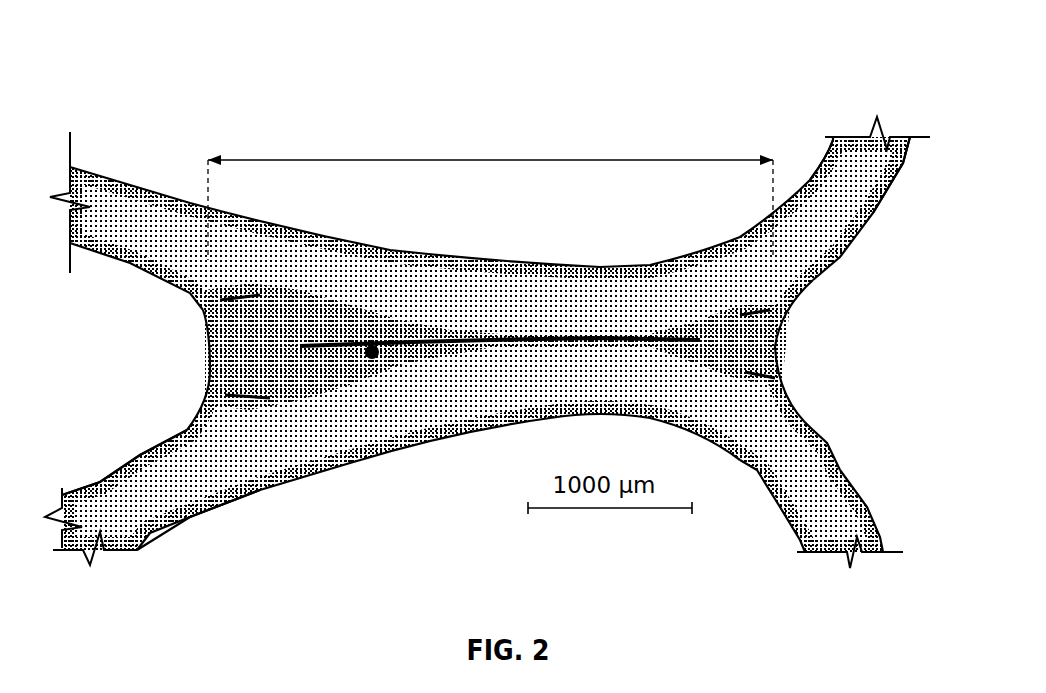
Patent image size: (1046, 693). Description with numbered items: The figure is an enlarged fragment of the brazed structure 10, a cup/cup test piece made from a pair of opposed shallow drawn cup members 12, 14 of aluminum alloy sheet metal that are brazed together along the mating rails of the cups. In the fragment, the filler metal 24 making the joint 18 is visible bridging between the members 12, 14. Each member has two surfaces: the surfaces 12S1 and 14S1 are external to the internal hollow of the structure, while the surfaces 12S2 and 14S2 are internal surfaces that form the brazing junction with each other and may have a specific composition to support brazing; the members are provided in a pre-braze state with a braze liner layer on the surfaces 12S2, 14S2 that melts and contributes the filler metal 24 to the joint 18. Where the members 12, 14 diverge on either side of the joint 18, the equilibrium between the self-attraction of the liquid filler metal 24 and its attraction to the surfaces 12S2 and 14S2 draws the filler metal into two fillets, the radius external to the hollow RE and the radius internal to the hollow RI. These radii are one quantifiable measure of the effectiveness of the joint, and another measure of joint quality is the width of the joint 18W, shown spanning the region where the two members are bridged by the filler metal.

The brazed structure 10 is at (170, 50).
The cup member 12 is at (868, 150).
The surface of member 12 12S1 is at (830, 150).
The surface of member 12 12S2 is at (905, 147).
The cup member 14 is at (825, 552).
The surface of member 14 14S1 is at (155, 532).
The surface of member 14 14S2 is at (107, 460).
The joint 18 is at (326, 364).
The width of the joint 18W is at (370, 160).
The filler metal 24 is at (375, 357).
The radius external to the hollow RE is at (188, 320).
The radius internal to the hollow RI is at (855, 347).